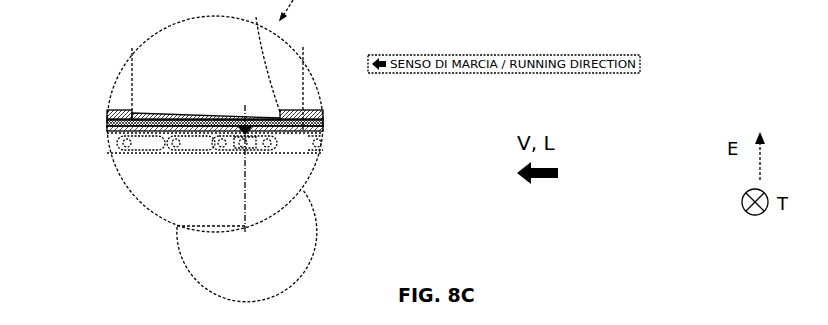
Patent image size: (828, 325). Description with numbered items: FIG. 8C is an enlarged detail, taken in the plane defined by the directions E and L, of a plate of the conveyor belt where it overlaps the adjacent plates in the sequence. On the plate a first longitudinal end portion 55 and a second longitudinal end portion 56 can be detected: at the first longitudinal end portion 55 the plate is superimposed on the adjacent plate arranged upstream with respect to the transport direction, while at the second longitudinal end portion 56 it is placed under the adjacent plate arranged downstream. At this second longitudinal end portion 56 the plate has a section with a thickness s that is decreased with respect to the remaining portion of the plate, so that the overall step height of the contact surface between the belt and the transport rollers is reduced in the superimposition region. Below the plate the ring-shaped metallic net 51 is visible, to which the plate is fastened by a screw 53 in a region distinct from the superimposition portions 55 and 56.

The metallic net 51 is at (143, 145).
The screw 53 is at (233, 121).
The first longitudinal end portion 55 is at (285, 112).
The second longitudinal end portion 56 is at (290, 130).
The thickness s is at (277, 126).